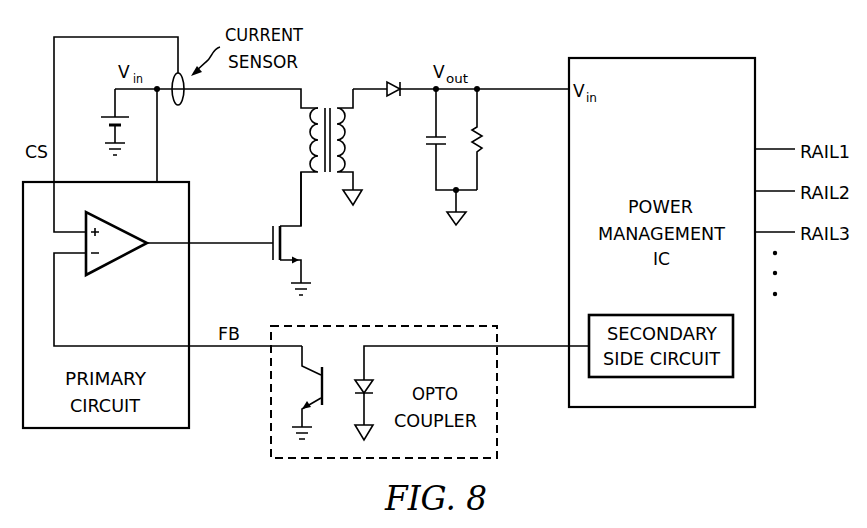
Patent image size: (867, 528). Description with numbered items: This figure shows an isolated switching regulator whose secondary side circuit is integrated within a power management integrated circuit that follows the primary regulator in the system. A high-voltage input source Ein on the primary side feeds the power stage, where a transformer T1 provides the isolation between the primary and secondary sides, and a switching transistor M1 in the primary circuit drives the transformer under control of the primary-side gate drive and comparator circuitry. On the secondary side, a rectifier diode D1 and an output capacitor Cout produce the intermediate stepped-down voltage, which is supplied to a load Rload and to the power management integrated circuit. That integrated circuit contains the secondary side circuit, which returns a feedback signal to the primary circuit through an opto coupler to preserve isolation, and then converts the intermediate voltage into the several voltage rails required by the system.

The input voltage source Ein is at (101, 122).
The switching transistor M1 is at (300, 233).
The transformer T1 is at (331, 152).
The rectifier diode D1 is at (394, 72).
The output capacitor Cout is at (429, 139).
The load resistor Rload is at (501, 139).